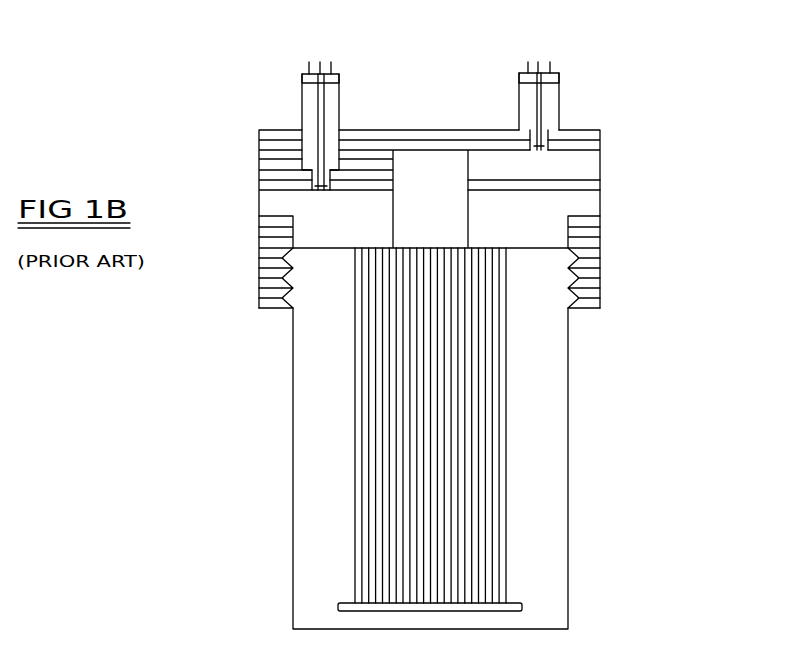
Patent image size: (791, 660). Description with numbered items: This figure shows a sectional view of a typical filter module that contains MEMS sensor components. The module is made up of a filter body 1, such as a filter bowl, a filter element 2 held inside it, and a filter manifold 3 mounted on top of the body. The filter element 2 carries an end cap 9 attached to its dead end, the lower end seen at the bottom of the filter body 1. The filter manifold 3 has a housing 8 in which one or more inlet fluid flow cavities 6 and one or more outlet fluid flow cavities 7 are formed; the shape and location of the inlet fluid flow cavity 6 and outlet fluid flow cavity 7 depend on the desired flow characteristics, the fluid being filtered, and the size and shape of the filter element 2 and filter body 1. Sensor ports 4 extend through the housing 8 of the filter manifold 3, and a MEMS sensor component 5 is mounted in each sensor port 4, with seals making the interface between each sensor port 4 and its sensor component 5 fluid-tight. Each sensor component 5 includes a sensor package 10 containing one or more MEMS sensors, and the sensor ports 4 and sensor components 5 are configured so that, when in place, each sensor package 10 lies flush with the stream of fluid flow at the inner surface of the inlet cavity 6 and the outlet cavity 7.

The filter body 1 is at (293, 392).
The filter element 2 is at (410, 447).
The filter manifold 3 is at (600, 248).
The sensor port 4 is at (301, 149).
The MEMS sensor component 5 is at (312, 95).
The inlet fluid flow cavity 6 is at (330, 226).
The outlet fluid flow cavity 7 is at (432, 170).
The housing 8 is at (550, 138).
The end cap 9 is at (522, 608).
The sensor package 10 is at (318, 190).